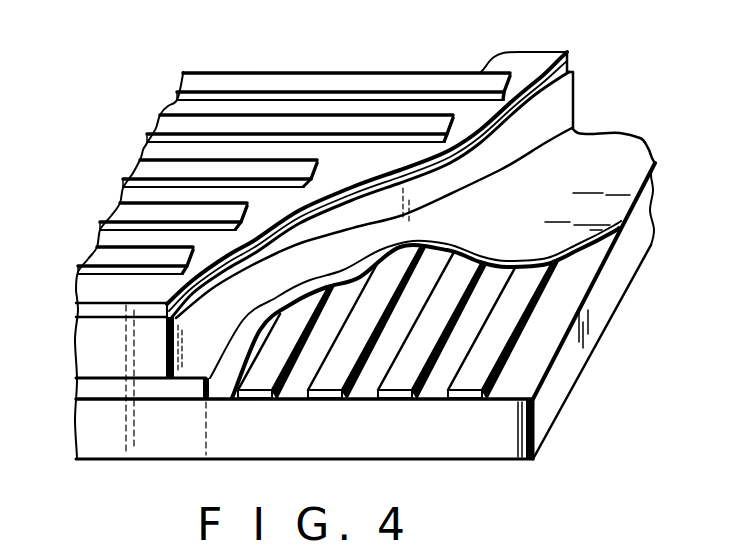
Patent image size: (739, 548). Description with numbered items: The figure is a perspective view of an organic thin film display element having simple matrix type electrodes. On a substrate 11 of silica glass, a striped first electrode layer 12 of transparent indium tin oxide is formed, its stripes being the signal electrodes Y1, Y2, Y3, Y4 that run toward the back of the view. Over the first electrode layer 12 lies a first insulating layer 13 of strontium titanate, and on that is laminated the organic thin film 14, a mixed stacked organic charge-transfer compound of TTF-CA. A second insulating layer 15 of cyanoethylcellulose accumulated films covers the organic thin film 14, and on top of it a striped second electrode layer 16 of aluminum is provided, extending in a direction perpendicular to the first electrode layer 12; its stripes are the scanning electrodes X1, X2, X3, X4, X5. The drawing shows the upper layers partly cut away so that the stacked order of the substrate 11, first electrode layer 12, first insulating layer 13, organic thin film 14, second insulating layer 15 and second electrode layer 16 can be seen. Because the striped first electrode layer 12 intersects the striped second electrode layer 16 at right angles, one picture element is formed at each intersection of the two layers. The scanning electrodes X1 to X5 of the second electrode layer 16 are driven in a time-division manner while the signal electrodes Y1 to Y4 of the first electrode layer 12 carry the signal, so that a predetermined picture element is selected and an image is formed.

The substrate 11 is at (506, 446).
The first electrode layer 12 is at (428, 342).
The first insulating layer 13 is at (658, 178).
The organic thin film 14 is at (567, 100).
The second insulating layer 15 is at (523, 60).
The second electrode layer 16 is at (297, 165).
The scanning electrode X1 is at (110, 259).
The scanning electrode X2 is at (149, 214).
The scanning electrode X3 is at (195, 170).
The scanning electrode X4 is at (277, 126).
The scanning electrode X5 is at (317, 82).
The signal electrode Y1 is at (503, 347).
The signal electrode Y2 is at (432, 344).
The signal electrode Y3 is at (365, 342).
The signal electrode Y4 is at (284, 360).